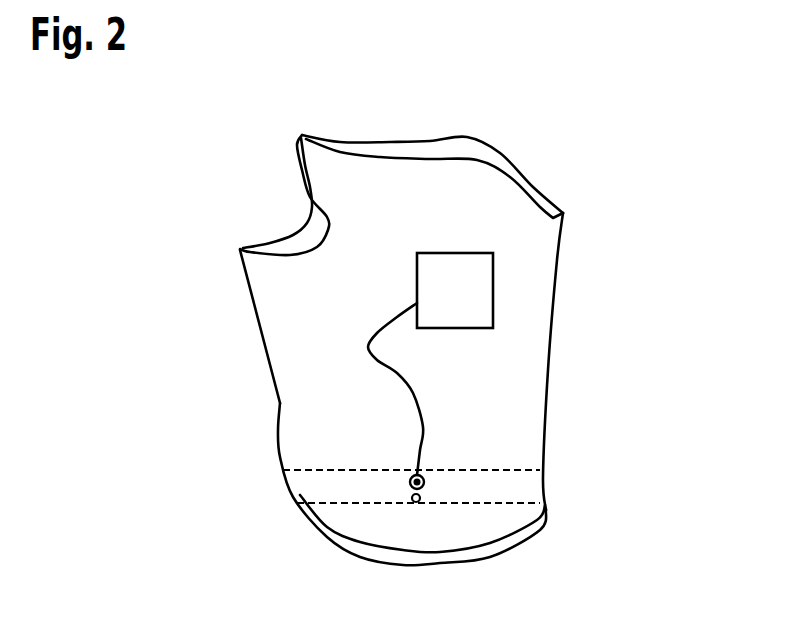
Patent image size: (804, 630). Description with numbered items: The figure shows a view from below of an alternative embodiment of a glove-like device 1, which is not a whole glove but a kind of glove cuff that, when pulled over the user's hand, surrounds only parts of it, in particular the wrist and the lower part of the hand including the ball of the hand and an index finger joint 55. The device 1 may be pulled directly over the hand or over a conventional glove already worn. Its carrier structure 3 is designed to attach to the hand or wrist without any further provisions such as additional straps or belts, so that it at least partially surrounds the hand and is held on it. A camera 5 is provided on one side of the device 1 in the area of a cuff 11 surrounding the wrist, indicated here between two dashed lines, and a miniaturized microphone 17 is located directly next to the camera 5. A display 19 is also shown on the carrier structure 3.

The glove-like device 1 is at (435, 350).
The carrier structure 3 is at (552, 343).
The camera 5 is at (435, 482).
The cuff 11 is at (480, 460).
The microphone 17 is at (433, 498).
The display 19 is at (510, 292).
The index finger joint 55 is at (275, 162).